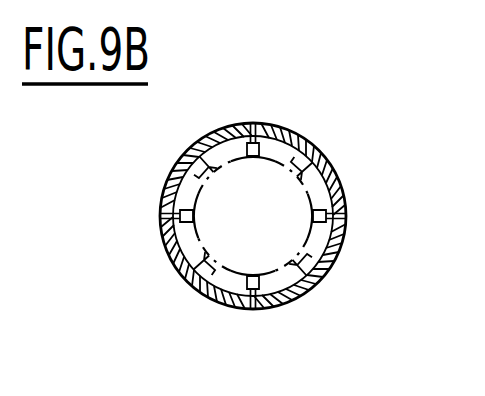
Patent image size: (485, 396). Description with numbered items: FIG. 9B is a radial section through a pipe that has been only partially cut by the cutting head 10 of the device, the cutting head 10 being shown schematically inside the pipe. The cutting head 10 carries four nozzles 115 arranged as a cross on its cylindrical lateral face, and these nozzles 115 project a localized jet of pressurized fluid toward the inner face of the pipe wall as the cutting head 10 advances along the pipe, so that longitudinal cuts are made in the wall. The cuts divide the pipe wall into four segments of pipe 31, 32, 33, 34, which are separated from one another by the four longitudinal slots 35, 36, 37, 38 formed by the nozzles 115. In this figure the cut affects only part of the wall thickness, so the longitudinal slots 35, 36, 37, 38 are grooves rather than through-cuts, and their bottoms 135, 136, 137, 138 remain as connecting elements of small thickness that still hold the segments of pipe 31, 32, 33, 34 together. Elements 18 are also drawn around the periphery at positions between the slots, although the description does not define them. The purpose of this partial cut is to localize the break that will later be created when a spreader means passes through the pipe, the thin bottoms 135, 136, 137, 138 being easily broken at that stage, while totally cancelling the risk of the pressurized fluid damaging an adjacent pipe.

The cutting head 10 is at (224, 131).
The locating lugs 18 is at (200, 160).
The segment of pipe 31 is at (167, 183).
The segment of pipe 32 is at (315, 131).
The segment of pipe 33 is at (207, 297).
The segment of pipe 34 is at (344, 251).
The longitudinal slot 35 is at (165, 217).
The longitudinal slot 36 is at (344, 216).
The longitudinal slot 37 is at (254, 124).
The longitudinal slot 38 is at (253, 311).
The nozzle 115 is at (288, 128).
The bottom of groove 135 is at (162, 215).
The bottom of groove 136 is at (348, 215).
The bottom of groove 137 is at (253, 124).
The bottom of groove 138 is at (252, 310).